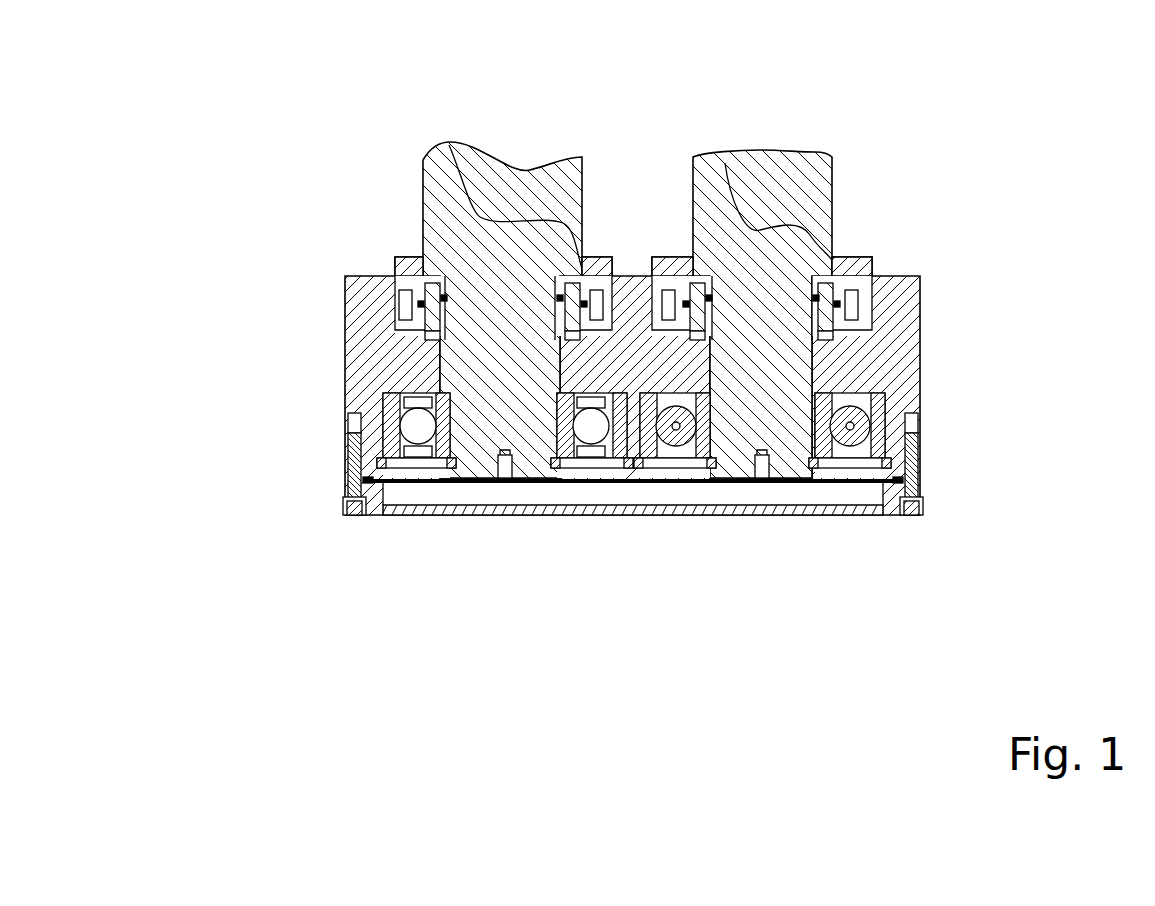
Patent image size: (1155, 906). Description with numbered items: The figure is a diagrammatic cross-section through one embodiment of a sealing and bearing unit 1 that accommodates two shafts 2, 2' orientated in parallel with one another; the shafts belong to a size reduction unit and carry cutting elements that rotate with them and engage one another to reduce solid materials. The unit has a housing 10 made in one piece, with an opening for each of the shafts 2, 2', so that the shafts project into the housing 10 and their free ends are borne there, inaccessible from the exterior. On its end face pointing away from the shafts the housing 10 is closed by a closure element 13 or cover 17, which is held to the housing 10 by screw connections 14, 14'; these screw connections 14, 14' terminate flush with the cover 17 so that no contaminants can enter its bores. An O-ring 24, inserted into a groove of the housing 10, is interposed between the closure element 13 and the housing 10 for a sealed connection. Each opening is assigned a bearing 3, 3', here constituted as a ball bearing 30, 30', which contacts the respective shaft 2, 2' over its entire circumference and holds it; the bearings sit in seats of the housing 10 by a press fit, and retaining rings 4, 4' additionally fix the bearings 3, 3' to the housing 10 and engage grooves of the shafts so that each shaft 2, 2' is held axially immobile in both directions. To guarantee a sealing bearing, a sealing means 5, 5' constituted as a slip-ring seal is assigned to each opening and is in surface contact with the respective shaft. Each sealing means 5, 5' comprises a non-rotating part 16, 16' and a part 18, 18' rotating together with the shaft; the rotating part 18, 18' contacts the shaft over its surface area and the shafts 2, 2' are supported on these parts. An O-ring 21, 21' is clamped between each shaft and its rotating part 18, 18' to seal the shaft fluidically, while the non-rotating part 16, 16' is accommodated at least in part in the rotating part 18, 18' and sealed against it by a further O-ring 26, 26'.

The sealing and bearing unit 1 is at (363, 722).
The shaft 2 is at (455, 273).
The shaft 2' is at (769, 248).
The bearing 3 is at (434, 452).
The ball bearing 30 is at (447, 452).
The bearing 3' is at (828, 427).
The ball bearing 30' is at (845, 427).
The retaining ring 4 is at (495, 525).
The retaining ring 4' is at (766, 534).
The sealing means 5 is at (583, 213).
The sealing means 5' is at (682, 213).
The housing 10 is at (920, 275).
The closure element 13 is at (807, 512).
The cover 17 is at (633, 590).
The screw connection 14 is at (309, 440).
The screw connection 14' is at (986, 458).
The non-rotating part 16 is at (327, 293).
The non-rotating part 16' is at (924, 551).
The rotating part 18 is at (336, 278).
The rotating part 18' is at (899, 224).
The O-ring 21 is at (507, 179).
The O-ring 21' is at (767, 184).
The O-ring 24 is at (345, 505).
The O-ring 26 is at (545, 221).
The O-ring 26' is at (792, 215).